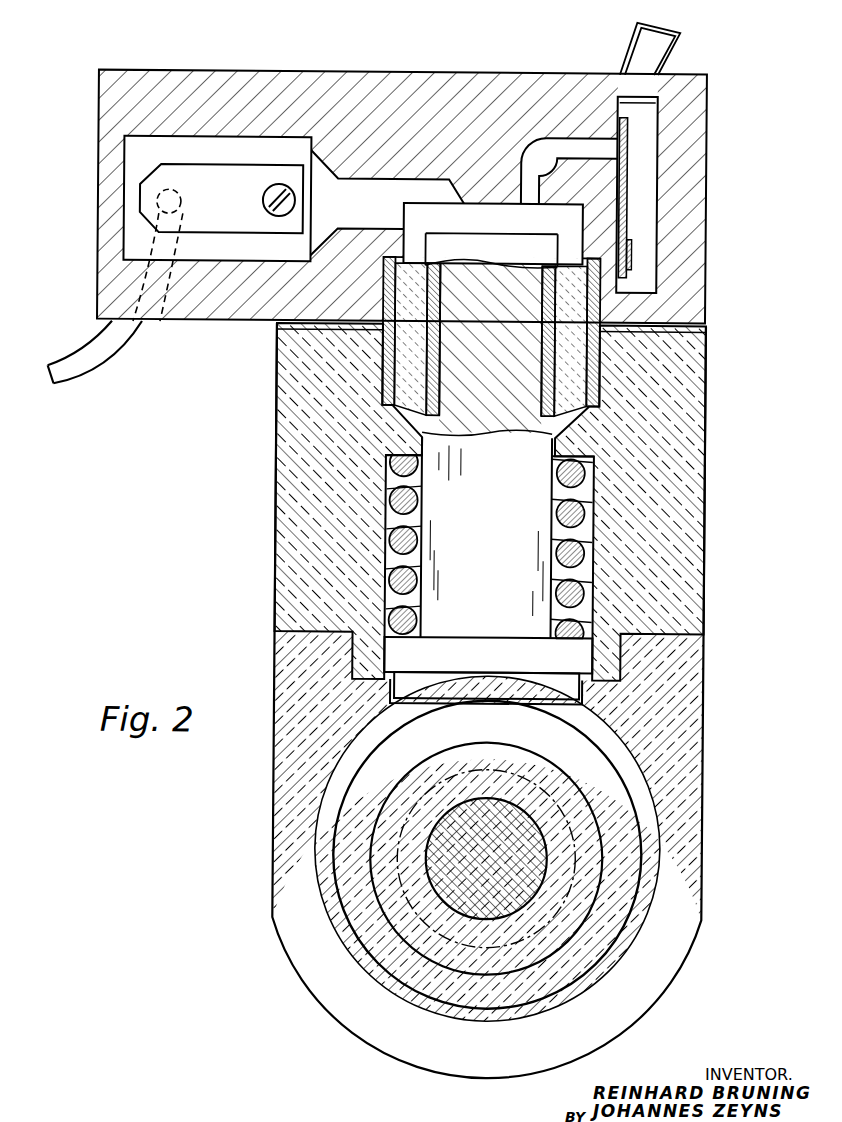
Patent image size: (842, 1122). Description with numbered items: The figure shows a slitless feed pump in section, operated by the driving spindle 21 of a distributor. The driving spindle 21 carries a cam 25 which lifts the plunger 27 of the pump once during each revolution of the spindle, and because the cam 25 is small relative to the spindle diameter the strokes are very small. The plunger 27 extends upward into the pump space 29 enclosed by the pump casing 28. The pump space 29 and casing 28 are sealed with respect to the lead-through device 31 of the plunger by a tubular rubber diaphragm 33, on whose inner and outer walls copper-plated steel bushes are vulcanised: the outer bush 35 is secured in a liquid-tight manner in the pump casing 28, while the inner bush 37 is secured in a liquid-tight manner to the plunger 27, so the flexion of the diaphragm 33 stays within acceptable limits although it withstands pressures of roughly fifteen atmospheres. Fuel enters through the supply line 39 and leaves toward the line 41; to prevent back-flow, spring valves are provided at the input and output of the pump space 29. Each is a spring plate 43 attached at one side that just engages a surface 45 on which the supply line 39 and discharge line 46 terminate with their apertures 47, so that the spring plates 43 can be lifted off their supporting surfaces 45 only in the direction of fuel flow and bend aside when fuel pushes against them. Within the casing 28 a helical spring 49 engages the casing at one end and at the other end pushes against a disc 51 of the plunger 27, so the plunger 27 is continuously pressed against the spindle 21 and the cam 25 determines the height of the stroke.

The driving spindle 21 is at (462, 854).
The cam 25 is at (497, 986).
The plunger 27 is at (460, 603).
The pump casing 28 is at (327, 539).
The pump space 29 is at (481, 220).
The lead-through device 31 is at (387, 486).
The tubular rubber diaphragm 33 is at (413, 360).
The outer bush 35 is at (383, 398).
The inner bush 37 is at (433, 341).
The supply line 39 is at (112, 338).
The line 41 is at (647, 46).
The spring plate 43 is at (228, 177).
The supporting surface 45 is at (135, 248).
The discharge line 46 is at (553, 149).
The aperture 47 is at (158, 203).
The helical spring 49 is at (405, 578).
The disc 51 is at (417, 654).